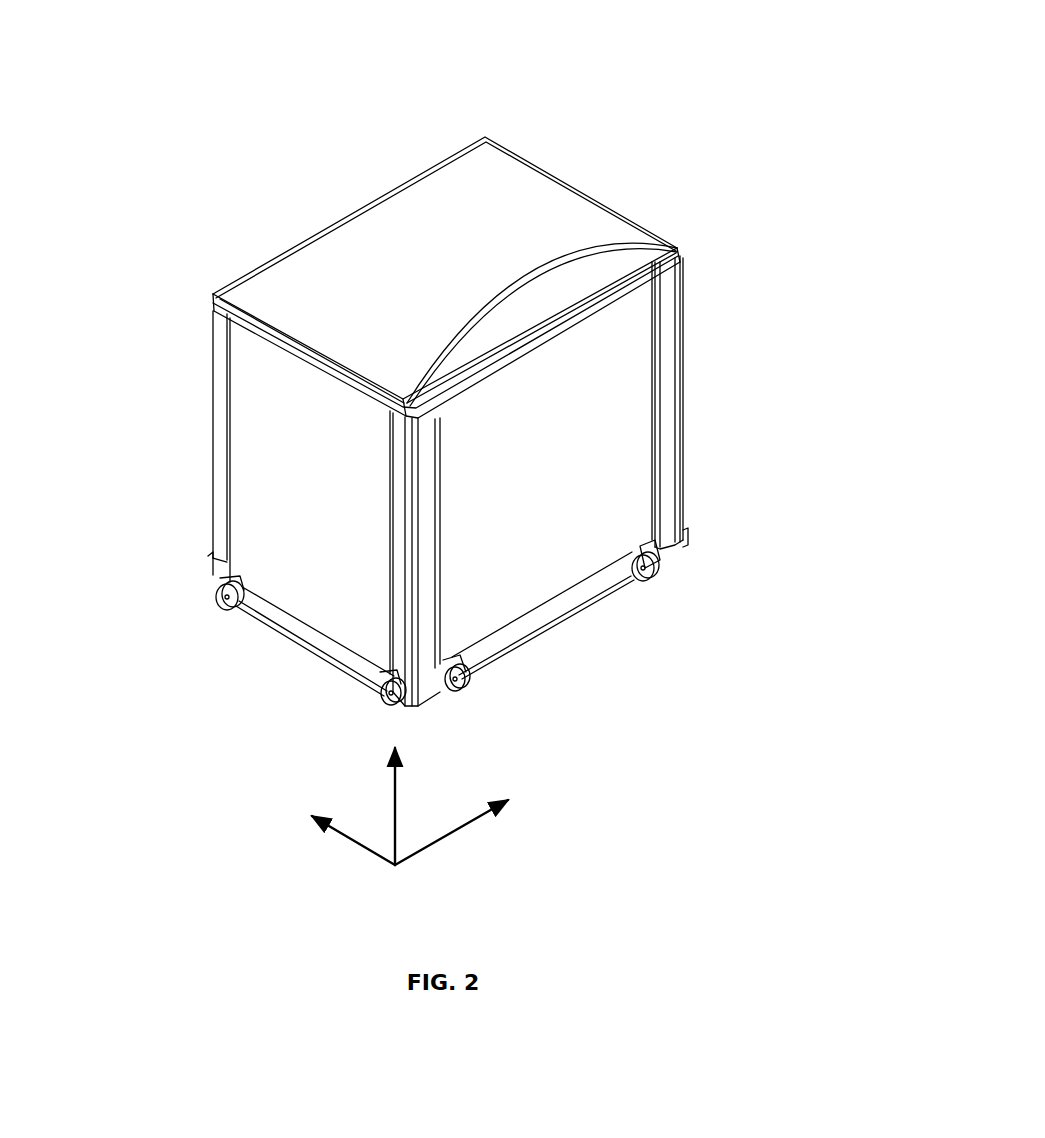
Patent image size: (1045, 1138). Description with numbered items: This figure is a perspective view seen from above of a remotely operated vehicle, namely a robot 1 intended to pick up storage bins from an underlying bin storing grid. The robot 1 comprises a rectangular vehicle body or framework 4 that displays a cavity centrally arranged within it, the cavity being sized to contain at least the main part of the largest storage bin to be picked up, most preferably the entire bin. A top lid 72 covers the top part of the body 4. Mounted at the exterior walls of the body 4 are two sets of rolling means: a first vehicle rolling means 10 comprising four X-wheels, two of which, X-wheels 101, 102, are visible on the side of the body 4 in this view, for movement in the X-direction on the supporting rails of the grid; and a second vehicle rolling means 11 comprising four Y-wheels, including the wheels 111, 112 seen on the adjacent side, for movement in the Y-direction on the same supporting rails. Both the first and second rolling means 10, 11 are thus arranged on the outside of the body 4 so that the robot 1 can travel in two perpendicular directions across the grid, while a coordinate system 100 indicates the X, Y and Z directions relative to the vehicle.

The robot 1 is at (622, 144).
The top lid 72 is at (446, 277).
The vehicle body 4 is at (441, 468).
The first vehicle rolling means 10 is at (706, 560).
The second vehicle rolling means 11 is at (172, 582).
The base / chassis 100 is at (604, 780).
The X-wheel 101 is at (660, 582).
The X-wheel 102 is at (466, 694).
The front left wheel 111 is at (384, 698).
The rear left wheel 112 is at (218, 604).